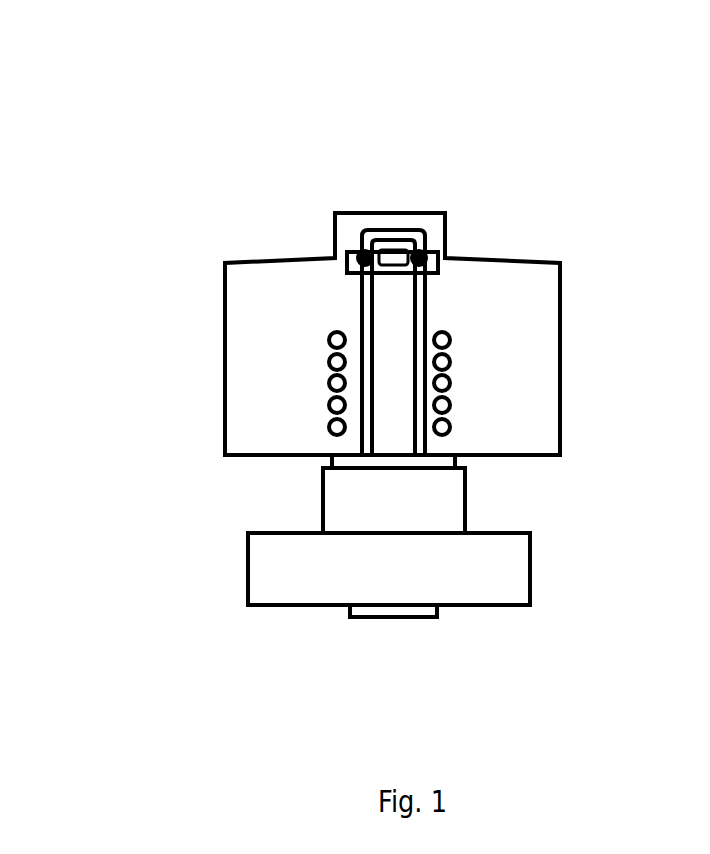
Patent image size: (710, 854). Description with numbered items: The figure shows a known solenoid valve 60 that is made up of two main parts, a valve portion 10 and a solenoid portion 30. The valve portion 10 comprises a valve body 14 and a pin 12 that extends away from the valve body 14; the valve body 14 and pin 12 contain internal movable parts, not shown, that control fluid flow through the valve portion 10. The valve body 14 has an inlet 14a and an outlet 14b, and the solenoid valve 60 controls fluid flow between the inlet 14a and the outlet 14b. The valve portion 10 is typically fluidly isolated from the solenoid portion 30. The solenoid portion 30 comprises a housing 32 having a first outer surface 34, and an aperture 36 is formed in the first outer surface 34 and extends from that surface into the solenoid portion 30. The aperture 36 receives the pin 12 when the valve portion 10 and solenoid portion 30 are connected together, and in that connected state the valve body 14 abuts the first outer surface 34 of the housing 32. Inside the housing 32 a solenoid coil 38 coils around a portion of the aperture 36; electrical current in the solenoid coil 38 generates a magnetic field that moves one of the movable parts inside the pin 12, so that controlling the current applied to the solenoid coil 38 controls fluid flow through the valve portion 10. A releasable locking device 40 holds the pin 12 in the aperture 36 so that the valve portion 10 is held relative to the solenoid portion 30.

The valve portion 10 is at (288, 645).
The pin 12 is at (407, 339).
The valve body 14 is at (130, 458).
The inlet 14a is at (577, 569).
The outlet 14b is at (240, 570).
The solenoid portion 30 is at (546, 214).
The housing 32 is at (563, 397).
The first outer surface 34 is at (542, 462).
The aperture 36 is at (426, 291).
The solenoid coil 38 is at (328, 341).
The releasable locking device 40 is at (347, 256).
The solenoid valve 60 is at (486, 106).